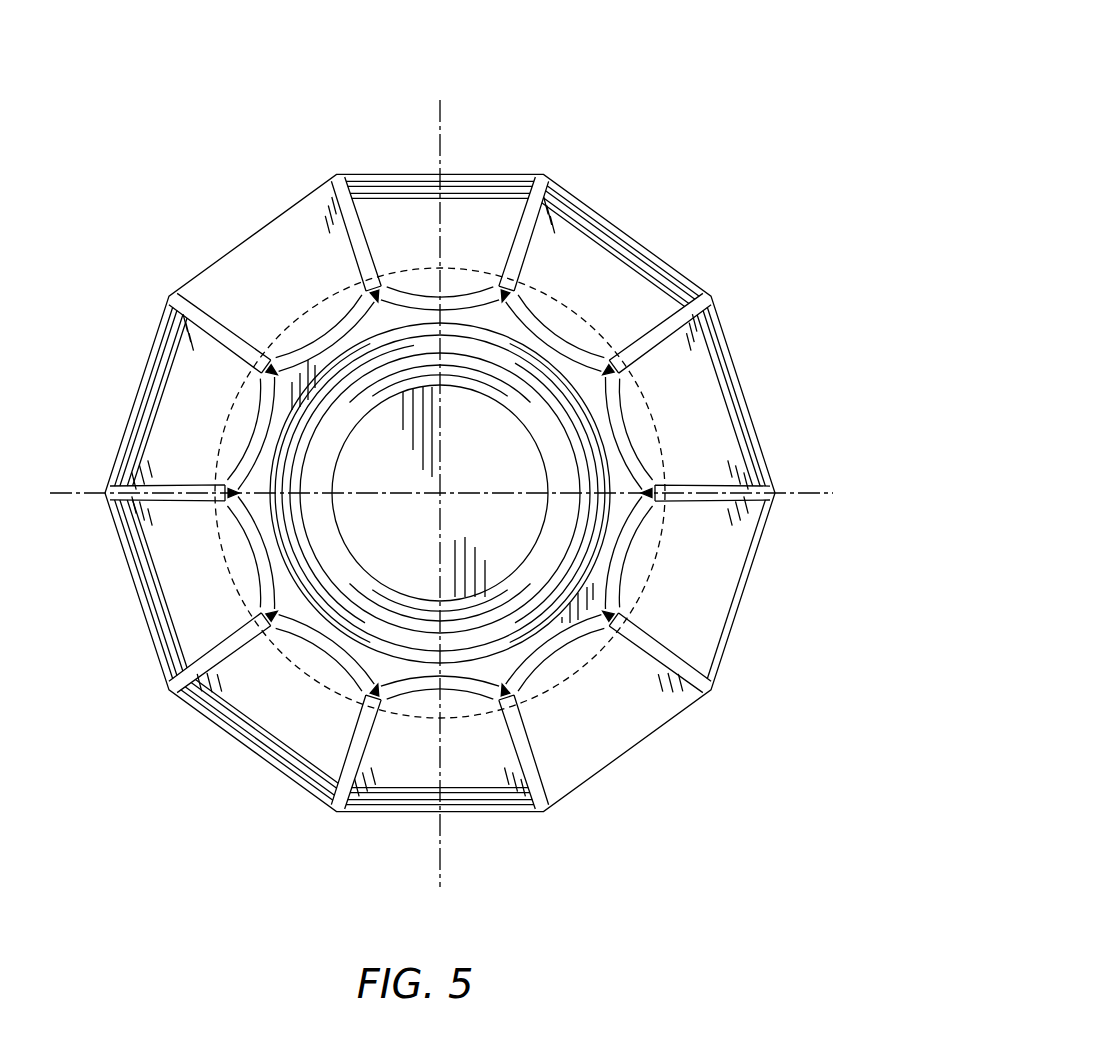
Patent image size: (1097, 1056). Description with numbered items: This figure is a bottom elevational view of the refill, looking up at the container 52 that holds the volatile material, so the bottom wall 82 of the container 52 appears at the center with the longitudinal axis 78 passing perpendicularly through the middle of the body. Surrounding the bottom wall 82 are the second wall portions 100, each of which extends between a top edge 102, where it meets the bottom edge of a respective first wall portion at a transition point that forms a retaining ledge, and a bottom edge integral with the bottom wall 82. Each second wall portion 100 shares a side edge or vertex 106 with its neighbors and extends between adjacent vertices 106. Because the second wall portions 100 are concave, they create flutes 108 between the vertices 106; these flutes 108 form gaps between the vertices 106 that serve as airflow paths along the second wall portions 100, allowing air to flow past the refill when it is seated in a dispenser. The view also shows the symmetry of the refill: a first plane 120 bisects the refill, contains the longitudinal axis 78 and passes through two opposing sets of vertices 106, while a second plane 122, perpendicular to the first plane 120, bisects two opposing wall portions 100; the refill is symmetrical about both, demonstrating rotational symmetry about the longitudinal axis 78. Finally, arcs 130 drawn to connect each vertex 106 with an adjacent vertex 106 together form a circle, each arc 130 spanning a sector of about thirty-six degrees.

The container 52 is at (720, 135).
The longitudinal axis 78 is at (445, 492).
The bottom wall 82 is at (318, 523).
The second wall portions 100 is at (497, 185).
The top edge 102 is at (403, 178).
The vertex 106 is at (338, 205).
The flutes 108 is at (412, 272).
The first plane 120 is at (820, 497).
The second plane 122 is at (446, 108).
The arcs 130 is at (456, 270).